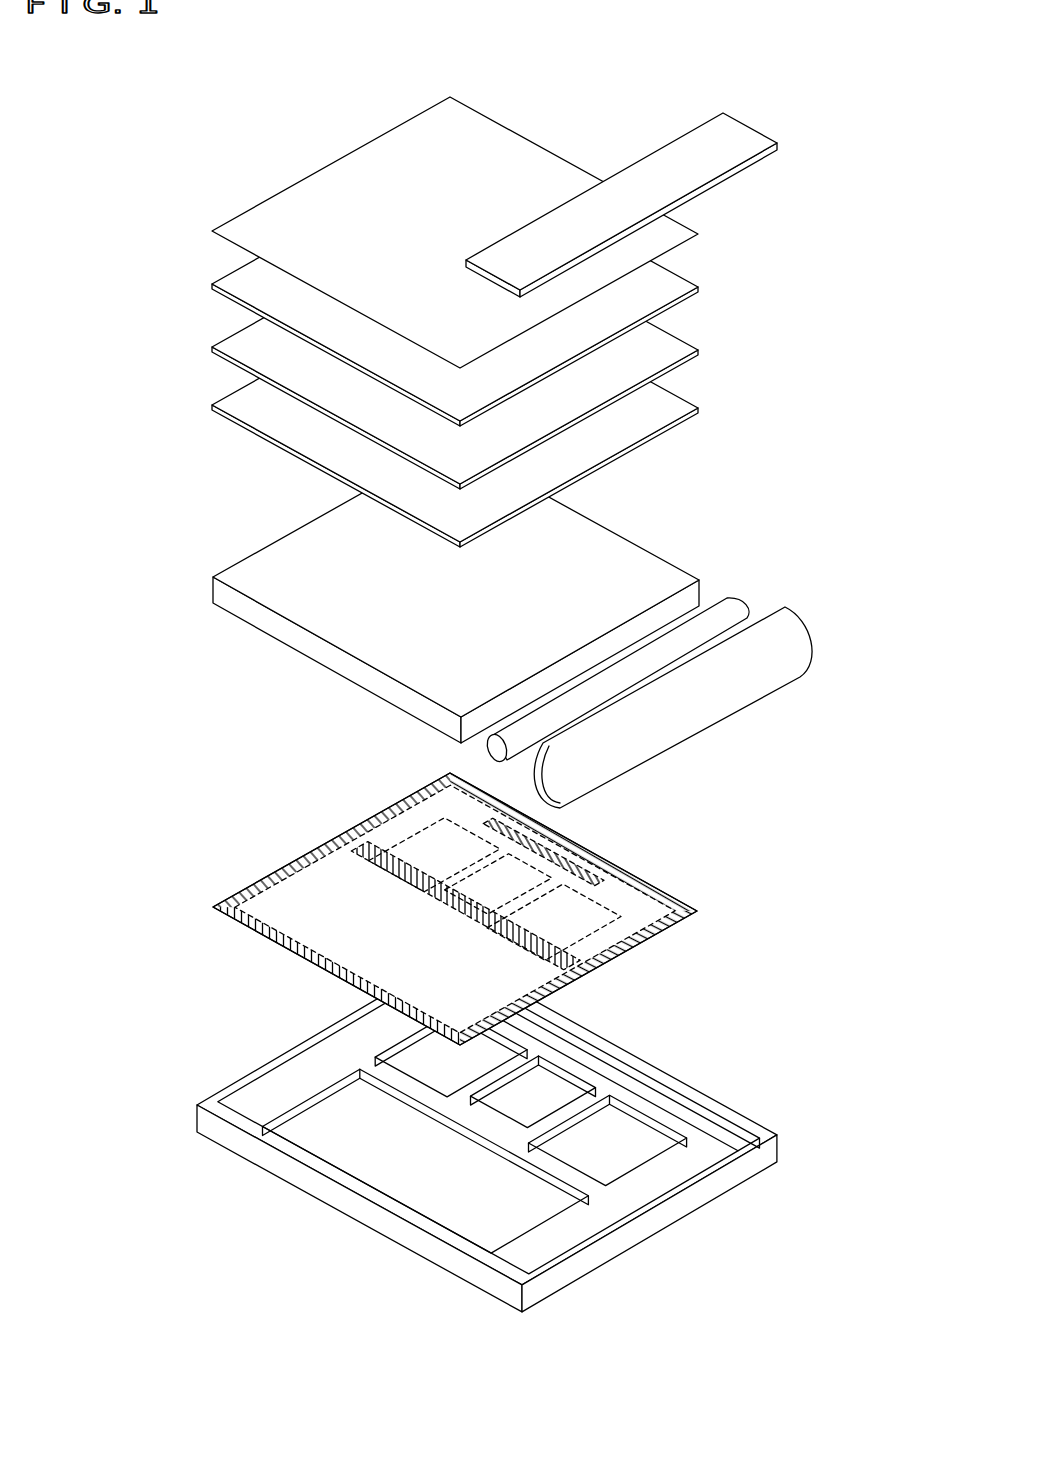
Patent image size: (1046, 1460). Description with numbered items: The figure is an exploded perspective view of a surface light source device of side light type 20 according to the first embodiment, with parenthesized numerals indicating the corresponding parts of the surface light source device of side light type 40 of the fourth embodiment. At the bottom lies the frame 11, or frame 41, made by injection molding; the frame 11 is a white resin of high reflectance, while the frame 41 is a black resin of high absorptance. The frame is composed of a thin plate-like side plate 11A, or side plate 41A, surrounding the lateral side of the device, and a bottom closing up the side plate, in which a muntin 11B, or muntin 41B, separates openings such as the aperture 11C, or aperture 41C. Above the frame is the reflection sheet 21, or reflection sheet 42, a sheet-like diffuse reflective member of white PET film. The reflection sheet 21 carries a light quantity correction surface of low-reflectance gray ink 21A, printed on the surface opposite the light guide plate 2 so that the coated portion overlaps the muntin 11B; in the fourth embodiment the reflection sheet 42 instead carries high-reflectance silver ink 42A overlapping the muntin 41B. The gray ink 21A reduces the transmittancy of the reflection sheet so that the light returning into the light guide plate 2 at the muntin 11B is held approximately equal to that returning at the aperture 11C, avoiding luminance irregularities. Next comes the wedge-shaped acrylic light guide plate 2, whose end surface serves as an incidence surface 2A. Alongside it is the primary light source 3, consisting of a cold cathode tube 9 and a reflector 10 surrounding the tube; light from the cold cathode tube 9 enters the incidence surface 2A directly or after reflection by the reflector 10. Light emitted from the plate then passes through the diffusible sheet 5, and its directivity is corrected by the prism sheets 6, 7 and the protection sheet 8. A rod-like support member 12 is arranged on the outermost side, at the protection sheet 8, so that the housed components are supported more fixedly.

The surface light source device of side light type 20 is at (465, 720).
The surface light source device of side light type 40 is at (135, 1198).
The frame 11 is at (521, 1139).
The frame 41 is at (521, 1139).
The side plate 11A is at (636, 1063).
The side plate 41A is at (690, 1095).
The muntin 11B is at (507, 1196).
The muntin 41B is at (548, 1245).
The aperture 11C is at (623, 1064).
The aperture 41C is at (550, 1087).
The reflection sheet 21 is at (519, 909).
The reflection sheet 42 is at (519, 909).
The gray ink 21A is at (519, 909).
The silver ink 42A is at (622, 957).
The primary light source 3 is at (586, 646).
The cold cathode tube 9 is at (525, 737).
The reflector 10 is at (672, 720).
The light guide plate 2 is at (451, 593).
The incidence surface 2A is at (605, 652).
The diffusible sheet 5 is at (668, 407).
The prism sheet 6 is at (668, 354).
The prism sheet 7 is at (668, 290).
The protection sheet 8 is at (668, 232).
The rod-like support member 12 is at (705, 152).